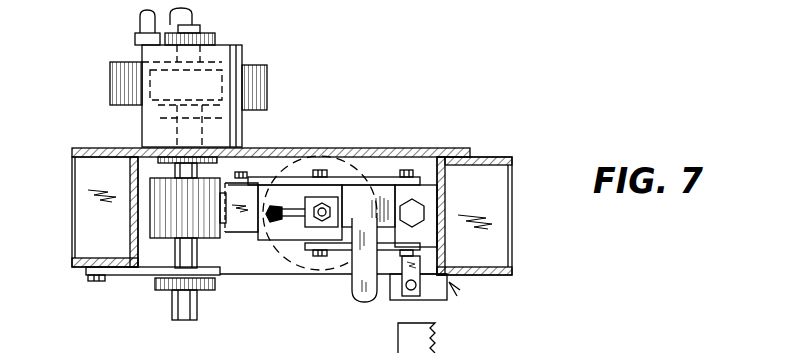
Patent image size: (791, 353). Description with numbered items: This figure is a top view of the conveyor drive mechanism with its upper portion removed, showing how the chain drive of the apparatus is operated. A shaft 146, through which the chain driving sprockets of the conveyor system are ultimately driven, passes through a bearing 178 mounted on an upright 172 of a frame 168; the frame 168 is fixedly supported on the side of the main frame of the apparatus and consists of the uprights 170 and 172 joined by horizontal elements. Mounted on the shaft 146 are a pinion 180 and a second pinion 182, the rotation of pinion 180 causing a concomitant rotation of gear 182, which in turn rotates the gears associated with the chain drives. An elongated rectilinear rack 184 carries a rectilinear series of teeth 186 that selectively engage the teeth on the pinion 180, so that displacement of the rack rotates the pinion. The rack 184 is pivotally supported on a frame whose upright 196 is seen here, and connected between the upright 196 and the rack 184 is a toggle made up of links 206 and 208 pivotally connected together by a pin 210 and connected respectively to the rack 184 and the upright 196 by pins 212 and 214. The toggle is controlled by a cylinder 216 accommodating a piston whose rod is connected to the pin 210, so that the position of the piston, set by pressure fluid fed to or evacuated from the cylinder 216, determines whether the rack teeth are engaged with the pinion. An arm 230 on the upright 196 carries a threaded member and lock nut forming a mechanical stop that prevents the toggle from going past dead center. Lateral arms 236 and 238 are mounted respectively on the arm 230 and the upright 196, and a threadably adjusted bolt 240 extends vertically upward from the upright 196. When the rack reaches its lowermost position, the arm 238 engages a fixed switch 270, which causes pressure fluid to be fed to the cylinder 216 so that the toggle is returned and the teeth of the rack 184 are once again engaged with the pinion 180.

The shaft 146 is at (199, 309).
The frame 168 is at (406, 147).
The upright 170 is at (499, 268).
The upright 172 is at (74, 267).
The bearing 178 is at (117, 277).
The pinion 180 is at (160, 234).
The second pinion 182 is at (268, 94).
The rack 184 is at (244, 229).
The teeth 186 is at (240, 238).
The upright 196 is at (429, 229).
The link 206 is at (250, 183).
The link 208 is at (335, 153).
The pin 210 is at (322, 243).
The pin 212 is at (243, 178).
The pin 214 is at (417, 176).
The cylinder 216 is at (303, 207).
The arm 230 is at (381, 207).
The arm 236 is at (356, 290).
The arm 238 is at (420, 276).
The bolt 240 is at (414, 211).
The fixed switch 270 is at (449, 282).